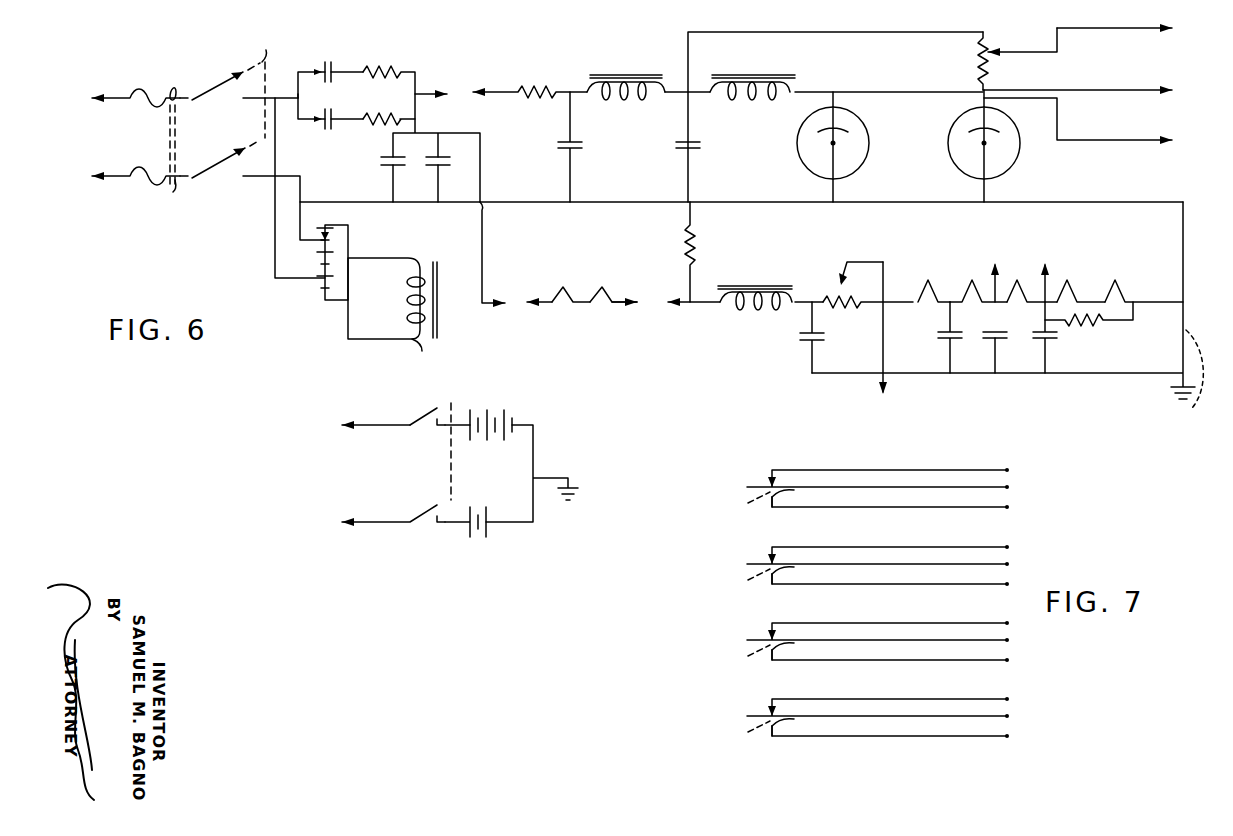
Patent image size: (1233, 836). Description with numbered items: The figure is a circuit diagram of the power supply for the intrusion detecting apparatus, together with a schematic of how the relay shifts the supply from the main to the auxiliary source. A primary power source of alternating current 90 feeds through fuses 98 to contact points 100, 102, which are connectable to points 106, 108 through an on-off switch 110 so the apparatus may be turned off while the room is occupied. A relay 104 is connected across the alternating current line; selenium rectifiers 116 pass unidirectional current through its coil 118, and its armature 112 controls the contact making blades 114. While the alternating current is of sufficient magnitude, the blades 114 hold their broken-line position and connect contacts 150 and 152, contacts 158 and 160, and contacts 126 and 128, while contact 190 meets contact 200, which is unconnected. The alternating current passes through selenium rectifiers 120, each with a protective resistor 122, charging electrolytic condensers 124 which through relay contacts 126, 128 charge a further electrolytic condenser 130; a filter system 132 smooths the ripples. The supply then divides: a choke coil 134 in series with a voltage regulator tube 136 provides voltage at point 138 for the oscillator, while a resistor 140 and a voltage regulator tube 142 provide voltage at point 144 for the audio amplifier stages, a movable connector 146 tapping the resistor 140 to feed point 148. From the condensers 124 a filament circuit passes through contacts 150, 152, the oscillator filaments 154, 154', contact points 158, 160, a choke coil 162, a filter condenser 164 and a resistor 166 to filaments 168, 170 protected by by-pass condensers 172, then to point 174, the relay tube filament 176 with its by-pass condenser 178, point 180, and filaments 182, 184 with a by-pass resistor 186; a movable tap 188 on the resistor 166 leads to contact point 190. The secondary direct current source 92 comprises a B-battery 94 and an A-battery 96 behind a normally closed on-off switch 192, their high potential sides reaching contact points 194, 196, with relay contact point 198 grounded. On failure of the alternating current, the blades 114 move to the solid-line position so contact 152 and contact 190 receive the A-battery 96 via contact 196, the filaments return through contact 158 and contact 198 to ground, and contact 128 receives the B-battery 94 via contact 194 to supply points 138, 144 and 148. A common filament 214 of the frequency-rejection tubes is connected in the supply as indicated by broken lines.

In FIG. 6, the primary power source of alternating current 90 is at (108, 134).
In FIG. 6, the secondary power source of direct current 92 is at (516, 434).
In FIG. 6, the B-battery 94 is at (484, 410).
In FIG. 6, the A-battery 96 is at (482, 536).
In FIG. 6, the fuses 98 is at (147, 106).
In FIG. 6, the contact point 100 is at (177, 94).
In FIG. 6, the contact point 102 is at (177, 190).
In FIG. 6, the relay 104 is at (428, 300).
In FIG. 6, the point 106 is at (196, 108).
In FIG. 6, the point 108 is at (204, 186).
In FIG. 6, the on-off switch 110 is at (270, 62).
In FIG. 6, the armature 112 is at (438, 280).
In FIG. 7, the contact making blades 114 is at (967, 487).
In FIG. 6, the selenium rectifiers 116 is at (320, 260).
In FIG. 6, the coil 118 is at (422, 351).
In FIG. 6, the selenium rectifiers 120 is at (330, 88).
In FIG. 6, the protective resistor 122 is at (385, 78).
In FIG. 6, the electrolytic condensers 124 is at (424, 178).
In FIG. 6, the relay contact 126 is at (442, 92).
In FIG. 7, the relay contact 126 is at (769, 730).
In FIG. 6, the relay contact 128 is at (480, 92).
In FIG. 7, the relay contact 128 is at (818, 720).
In FIG. 6, the electrolytic condenser 130 is at (582, 152).
In FIG. 6, the filter system 132 is at (658, 100).
In FIG. 6, the choke coil 134 is at (750, 100).
In FIG. 6, the voltage regulator tube 136 is at (853, 128).
In FIG. 6, the point 138 is at (1172, 90).
In FIG. 6, the resistor 140 is at (976, 62).
In FIG. 6, the voltage regulator tube 142 is at (1006, 165).
In FIG. 6, the point 144 is at (1172, 140).
In FIG. 6, the movable connector 146 is at (992, 52).
In FIG. 6, the point 148 is at (1172, 28).
In FIG. 6, the contact 150 is at (496, 292).
In FIG. 7, the contact 150 is at (768, 504).
In FIG. 6, the contact 152 is at (532, 304).
In FIG. 7, the contact 152 is at (812, 492).
In FIG. 6, the filament 154 is at (571, 274).
In FIG. 6, the filament 154' is at (619, 274).
In FIG. 6, the contact point 158 is at (632, 306).
In FIG. 7, the contact point 158 is at (820, 568).
In FIG. 6, the contact point 160 is at (672, 306).
In FIG. 7, the contact point 160 is at (772, 580).
In FIG. 6, the choke coil 162 is at (748, 288).
In FIG. 6, the filter condenser 164 is at (800, 344).
In FIG. 6, the resistor 166 is at (836, 310).
In FIG. 6, the filament 168 is at (928, 280).
In FIG. 6, the filament 170 is at (970, 280).
In FIG. 6, the by-pass condensers 172 is at (982, 352).
In FIG. 6, the point 174 is at (998, 262).
In FIG. 6, the filament 176 is at (1012, 305).
In FIG. 6, the by-pass condenser 178 is at (1050, 344).
In FIG. 6, the point 180 is at (1045, 266).
In FIG. 6, the filament 182 is at (1069, 282).
In FIG. 6, the filament 184 is at (1118, 282).
In FIG. 6, the by-pass resistor 186 is at (1088, 326).
In FIG. 6, the movable tap 188 is at (838, 276).
In FIG. 6, the contact point 190 is at (884, 392).
In FIG. 7, the contact point 190 is at (816, 644).
In FIG. 6, the on-off switch 192 is at (420, 412).
In FIG. 6, the contact point 194 is at (350, 424).
In FIG. 7, the contact point 194 is at (774, 712).
In FIG. 6, the contact point 196 is at (364, 498).
In FIG. 7, the contact point 196 is at (770, 480).
In FIG. 7, the relay contact point 198 is at (768, 562).
In FIG. 7, the contact point 200 is at (754, 652).
In FIG. 6, the common filament 214 is at (1202, 378).